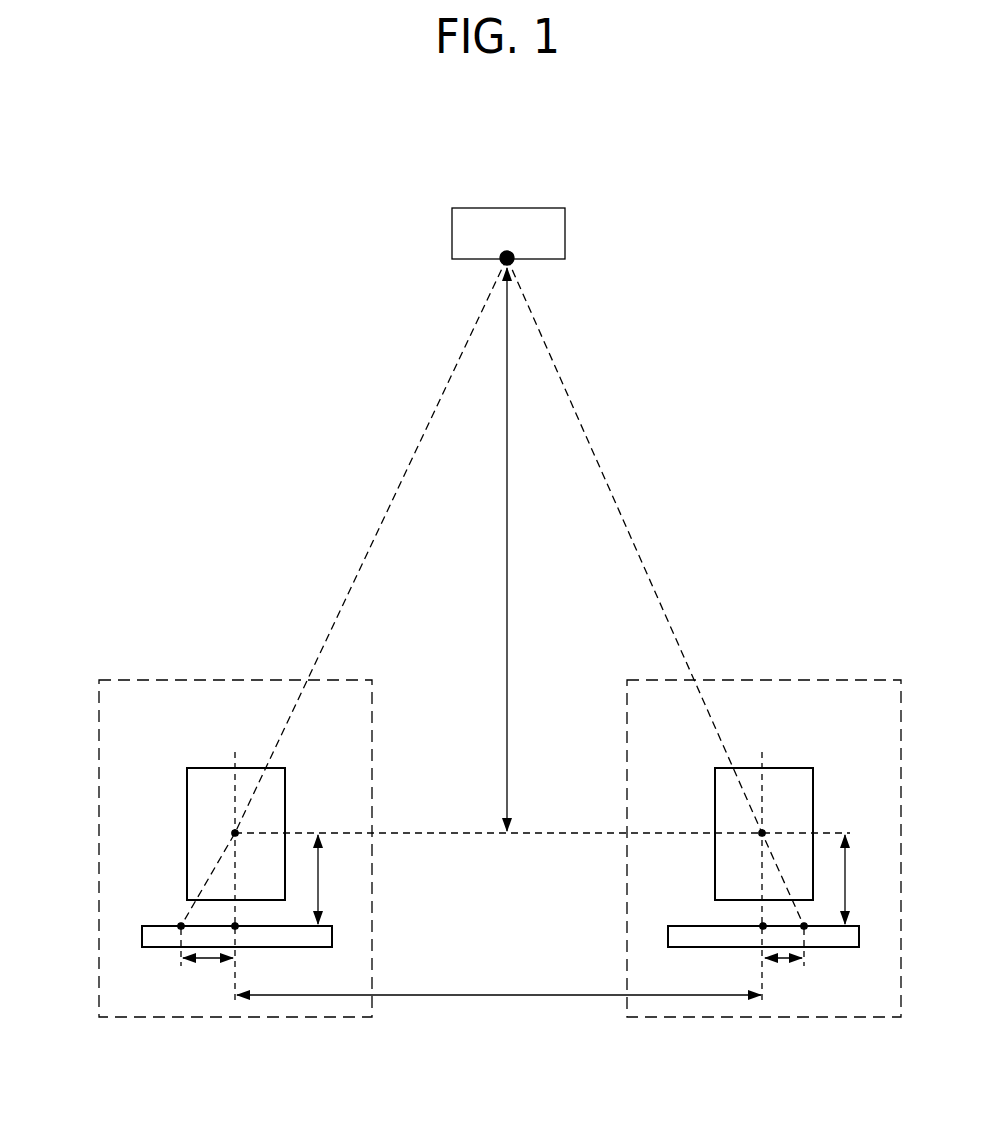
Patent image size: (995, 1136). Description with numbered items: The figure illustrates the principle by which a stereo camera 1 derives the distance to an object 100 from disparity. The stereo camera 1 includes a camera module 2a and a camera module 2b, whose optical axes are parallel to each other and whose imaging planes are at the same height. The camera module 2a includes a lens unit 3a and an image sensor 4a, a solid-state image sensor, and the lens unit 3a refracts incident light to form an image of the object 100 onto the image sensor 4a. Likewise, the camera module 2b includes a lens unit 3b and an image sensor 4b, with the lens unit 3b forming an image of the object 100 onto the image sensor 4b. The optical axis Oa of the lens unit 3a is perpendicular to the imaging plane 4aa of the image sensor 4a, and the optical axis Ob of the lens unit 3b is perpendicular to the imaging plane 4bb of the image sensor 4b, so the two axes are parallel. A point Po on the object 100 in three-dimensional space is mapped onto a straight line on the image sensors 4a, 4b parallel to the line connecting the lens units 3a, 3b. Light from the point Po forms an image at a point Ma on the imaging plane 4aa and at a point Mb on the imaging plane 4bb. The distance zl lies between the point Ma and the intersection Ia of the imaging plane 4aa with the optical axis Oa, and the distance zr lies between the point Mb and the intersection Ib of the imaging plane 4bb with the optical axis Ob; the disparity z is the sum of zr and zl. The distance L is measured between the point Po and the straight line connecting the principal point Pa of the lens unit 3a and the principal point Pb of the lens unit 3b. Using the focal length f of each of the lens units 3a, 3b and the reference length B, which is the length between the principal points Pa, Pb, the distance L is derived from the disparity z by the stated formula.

The stereo camera 1 is at (305, 288).
The object 100 is at (505, 208).
The point on the object Po is at (520, 266).
The distance L is at (496, 549).
The camera module 2a is at (99, 724).
The camera module 2b is at (901, 724).
The lens unit 3a is at (187, 836).
The lens unit 3b is at (813, 794).
The image sensor 4a is at (142, 938).
The image sensor 4b is at (859, 940).
The imaging plane 4aa is at (160, 920).
The imaging plane 4bb is at (698, 920).
The optical axis Oa is at (236, 864).
The optical axis Ob is at (763, 864).
The principal point Pa is at (243, 825).
The principal point Pb is at (754, 826).
The image point Ma is at (177, 934).
The image point Mb is at (811, 934).
The intersection Ia is at (242, 934).
The intersection Ib is at (756, 934).
The distance zl is at (208, 974).
The distance zr is at (783, 974).
The focal length f is at (591, 879).
The reference length B is at (499, 981).